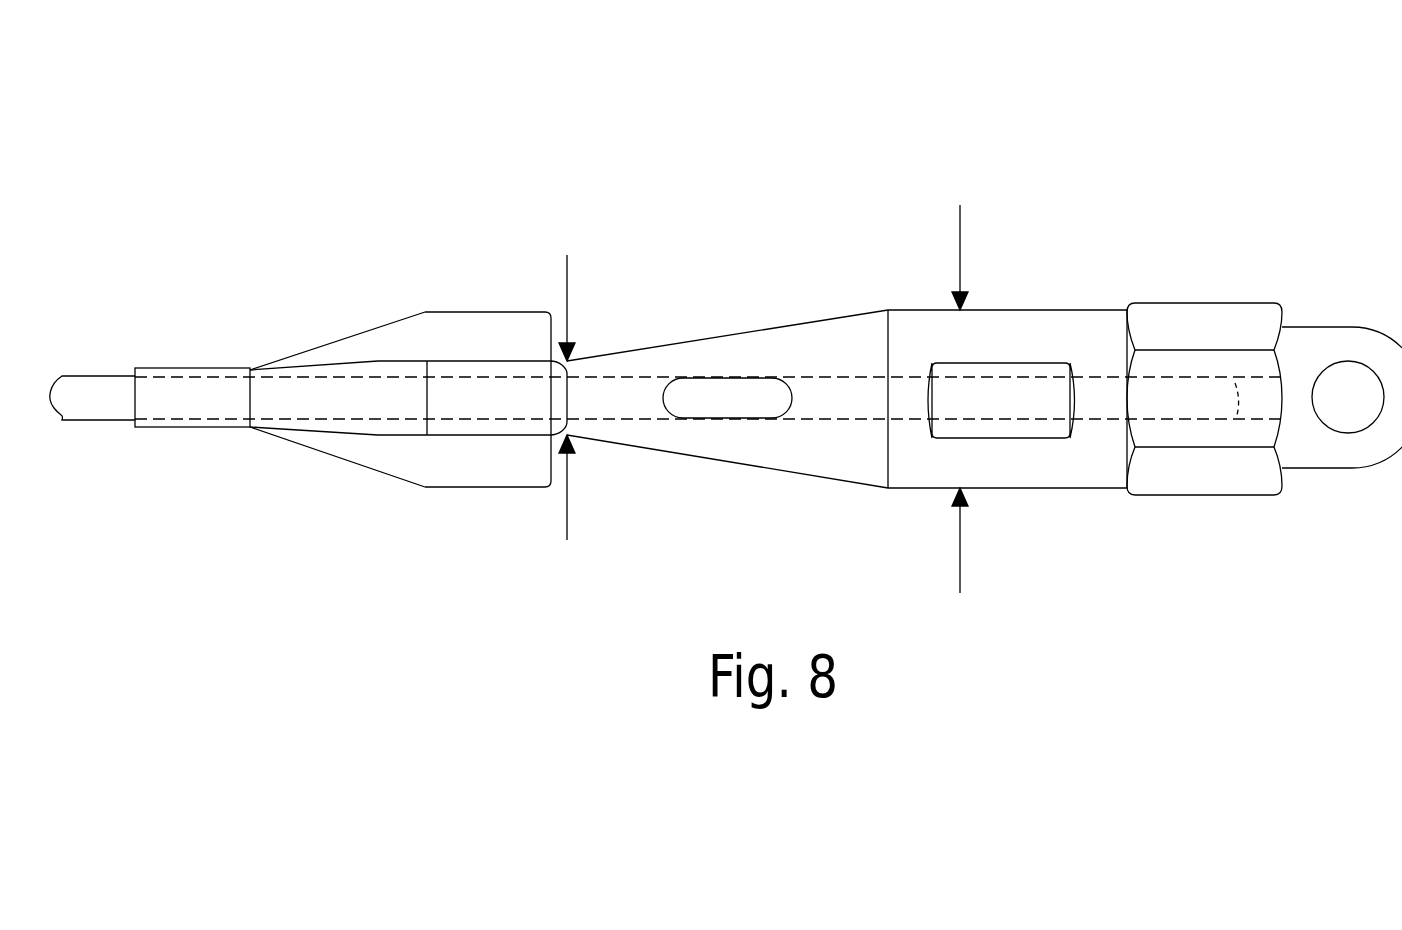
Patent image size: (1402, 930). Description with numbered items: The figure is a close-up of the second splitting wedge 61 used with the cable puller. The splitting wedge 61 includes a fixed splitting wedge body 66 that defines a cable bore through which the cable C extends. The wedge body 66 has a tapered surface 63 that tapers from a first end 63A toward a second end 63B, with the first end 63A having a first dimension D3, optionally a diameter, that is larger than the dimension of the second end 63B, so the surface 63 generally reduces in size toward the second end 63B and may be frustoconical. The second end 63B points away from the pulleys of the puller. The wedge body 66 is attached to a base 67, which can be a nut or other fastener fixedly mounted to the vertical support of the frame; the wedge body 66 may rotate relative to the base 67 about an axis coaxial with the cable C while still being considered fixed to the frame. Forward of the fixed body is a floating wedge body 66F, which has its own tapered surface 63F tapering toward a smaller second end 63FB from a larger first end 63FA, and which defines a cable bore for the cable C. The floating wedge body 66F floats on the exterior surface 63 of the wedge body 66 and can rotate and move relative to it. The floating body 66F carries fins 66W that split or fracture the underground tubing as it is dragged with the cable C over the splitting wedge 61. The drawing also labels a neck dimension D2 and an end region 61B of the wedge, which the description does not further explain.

The second splitting wedge 61 is at (798, 177).
The drive shaft bore end 61B is at (1250, 418).
The tapered surface 63 is at (781, 326).
The first end 63A is at (922, 310).
The second end 63B is at (628, 352).
The tapered surface of floating wedge body 63F is at (348, 362).
The larger first end 63FA is at (487, 312).
The smaller second end 63FB is at (185, 368).
The splitting wedge body 66 is at (1083, 310).
The floating wedge body 66F is at (437, 312).
The fins 66W is at (392, 337).
The base 67 is at (1180, 318).
The cable C is at (98, 385).
The neck diameter D2 is at (568, 412).
The first dimension D3 is at (960, 415).